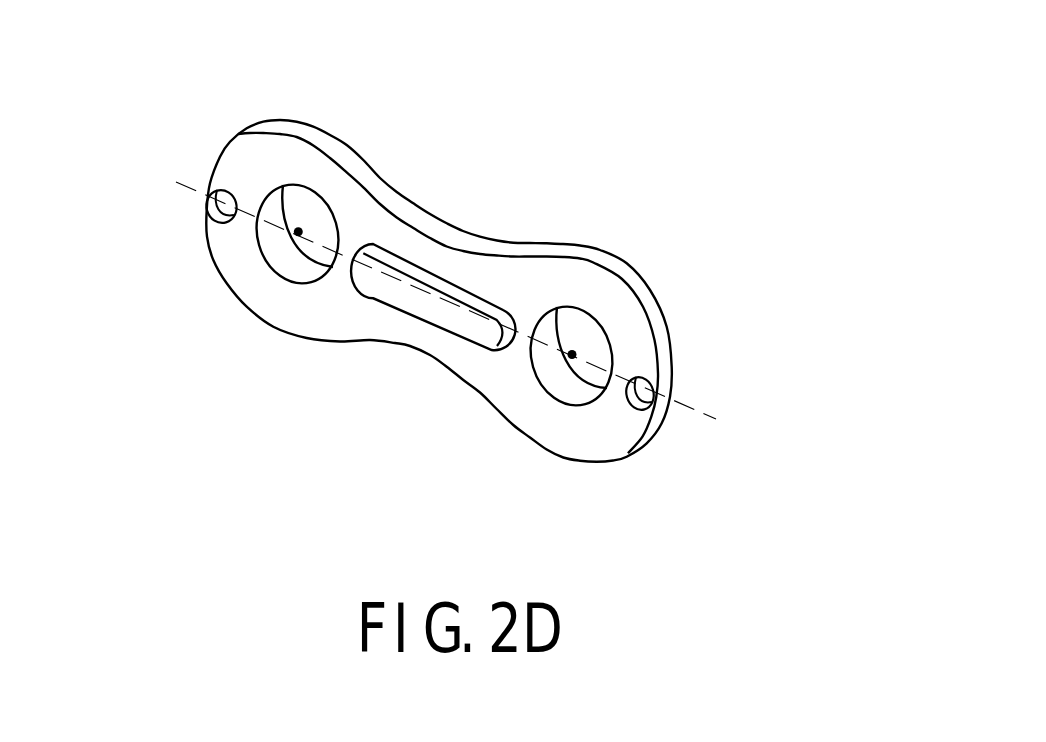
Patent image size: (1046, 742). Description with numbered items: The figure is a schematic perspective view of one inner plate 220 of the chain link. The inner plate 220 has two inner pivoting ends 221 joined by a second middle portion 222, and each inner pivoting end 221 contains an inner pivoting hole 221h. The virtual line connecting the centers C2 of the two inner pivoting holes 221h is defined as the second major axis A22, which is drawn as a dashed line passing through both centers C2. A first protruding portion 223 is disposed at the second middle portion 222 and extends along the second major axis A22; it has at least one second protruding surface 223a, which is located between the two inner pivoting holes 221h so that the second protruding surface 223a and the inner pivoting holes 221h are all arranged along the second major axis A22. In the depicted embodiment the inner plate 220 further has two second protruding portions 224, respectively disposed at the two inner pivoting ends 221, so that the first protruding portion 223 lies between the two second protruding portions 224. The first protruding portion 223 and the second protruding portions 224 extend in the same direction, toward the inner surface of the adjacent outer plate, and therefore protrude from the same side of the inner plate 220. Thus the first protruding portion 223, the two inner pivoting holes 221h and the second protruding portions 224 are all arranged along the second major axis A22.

The inner plate 220 is at (157, 48).
The inner pivoting end 221 is at (270, 156).
The second middle portion 222 is at (422, 248).
The first protruding portion 223 is at (455, 288).
The second protruding surface 223a is at (407, 303).
The inner pivoting hole 221h is at (311, 268).
The second protruding portion 224 is at (214, 212).
The center C2 is at (297, 233).
The second major axis A22 is at (716, 419).